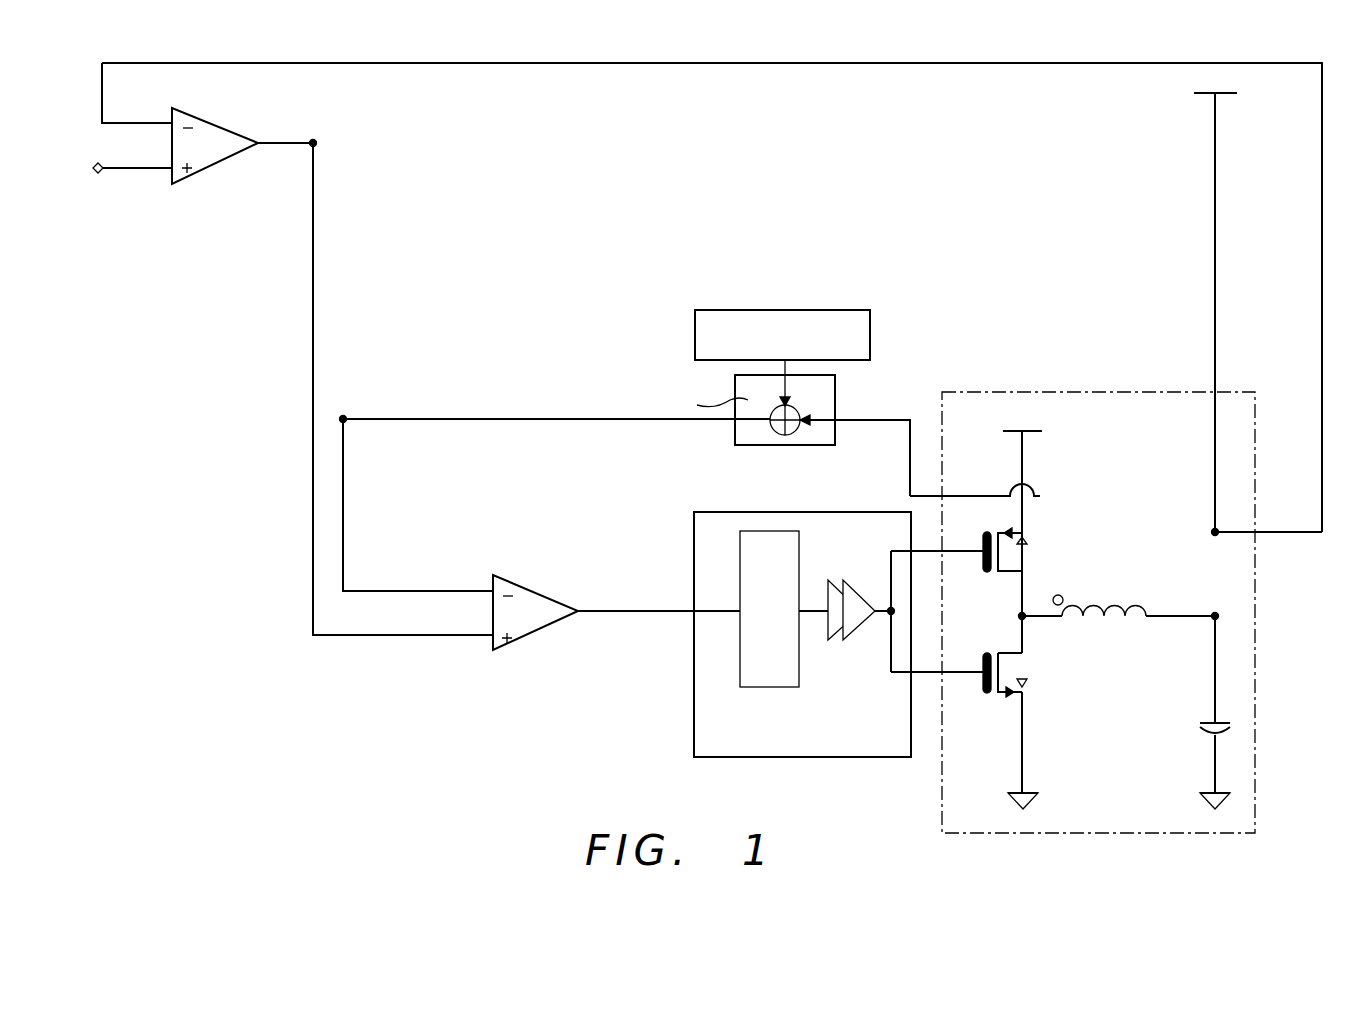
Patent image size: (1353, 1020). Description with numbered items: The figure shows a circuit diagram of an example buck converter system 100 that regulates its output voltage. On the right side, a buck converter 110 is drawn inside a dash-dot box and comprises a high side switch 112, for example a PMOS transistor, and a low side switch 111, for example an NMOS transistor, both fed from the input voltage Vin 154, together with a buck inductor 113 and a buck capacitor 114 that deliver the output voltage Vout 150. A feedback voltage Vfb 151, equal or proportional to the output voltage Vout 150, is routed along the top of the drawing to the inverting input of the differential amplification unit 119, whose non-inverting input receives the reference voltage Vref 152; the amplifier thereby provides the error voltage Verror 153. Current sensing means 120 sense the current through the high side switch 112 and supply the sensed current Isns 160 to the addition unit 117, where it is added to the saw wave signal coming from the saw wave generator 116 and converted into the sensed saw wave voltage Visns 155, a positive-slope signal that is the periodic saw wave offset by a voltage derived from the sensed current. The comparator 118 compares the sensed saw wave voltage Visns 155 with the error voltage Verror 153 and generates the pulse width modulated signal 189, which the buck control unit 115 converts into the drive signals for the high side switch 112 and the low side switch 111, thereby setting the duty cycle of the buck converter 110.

The buck converter system 100 is at (388, 728).
The buck converter 110 is at (1090, 833).
The low side switch 111 is at (1025, 663).
The high side switch 112 is at (1025, 557).
The buck inductor 113 is at (1110, 628).
The buck capacitor 114 is at (1196, 727).
The buck control unit 115 is at (835, 757).
The saw wave generator 116 is at (815, 310).
The addition unit 117 is at (753, 445).
The comparator 118 is at (545, 630).
The differential amplification unit 119 is at (227, 166).
The current sensing means 120 is at (1044, 496).
The output voltage Vout 150 is at (1208, 532).
The feedback voltage Vfb 151 is at (104, 77).
The reference voltage Vref 152 is at (128, 175).
The error voltage Verror 153 is at (315, 176).
The input voltage Vin 154 is at (1225, 103).
The sensed saw wave voltage Visns 155 is at (487, 591).
The sensed current Isns 160 is at (912, 438).
The pulse width modulated signal 189 is at (632, 617).